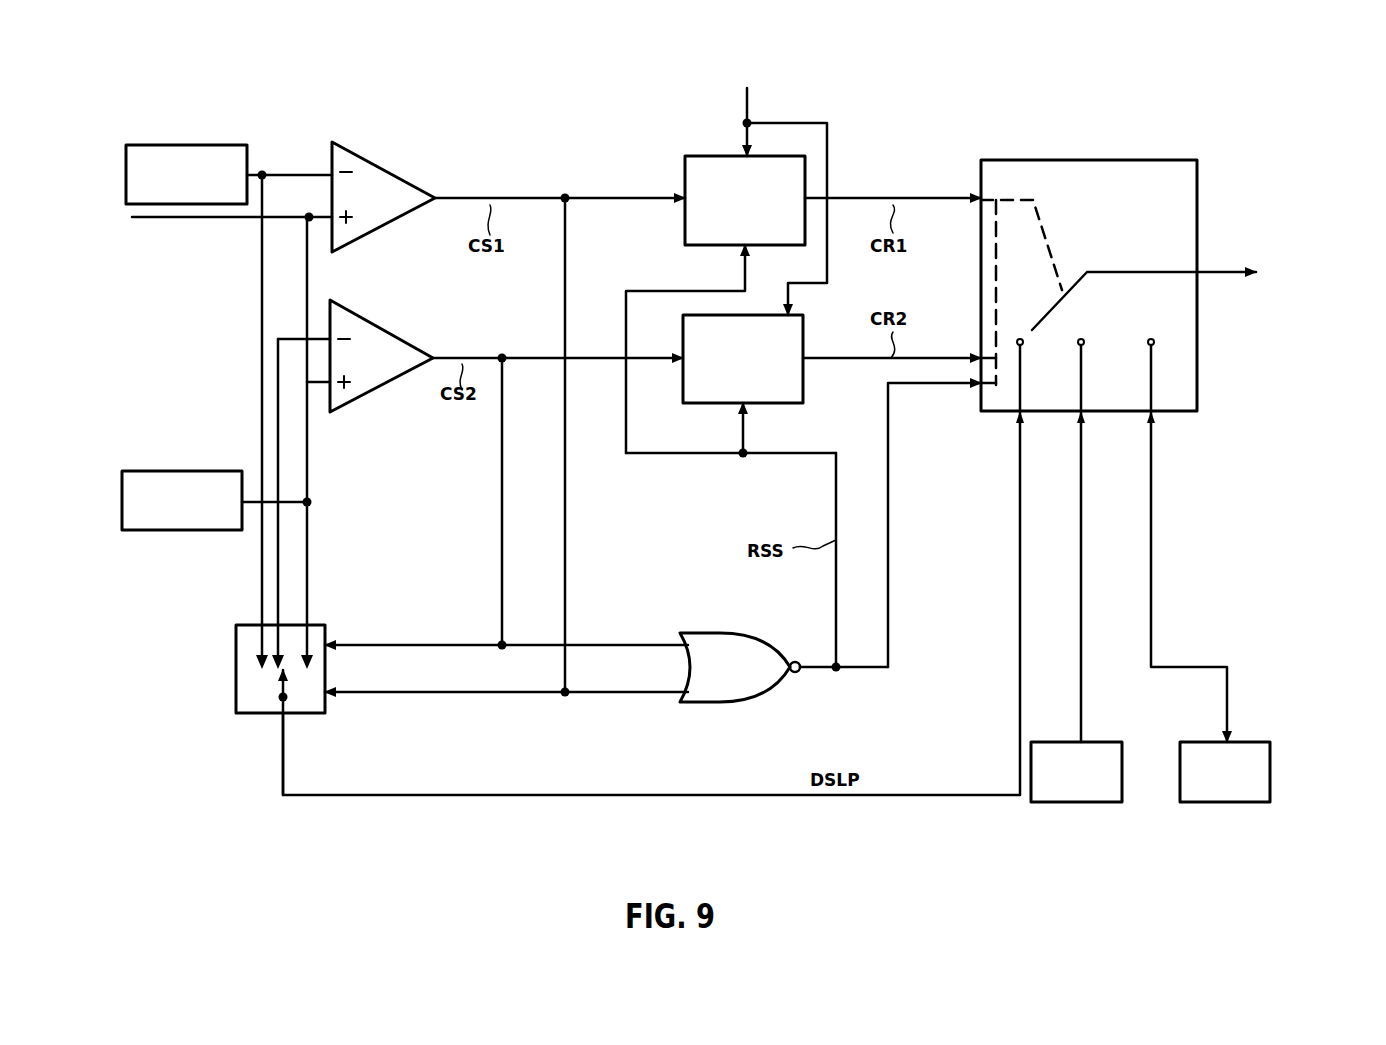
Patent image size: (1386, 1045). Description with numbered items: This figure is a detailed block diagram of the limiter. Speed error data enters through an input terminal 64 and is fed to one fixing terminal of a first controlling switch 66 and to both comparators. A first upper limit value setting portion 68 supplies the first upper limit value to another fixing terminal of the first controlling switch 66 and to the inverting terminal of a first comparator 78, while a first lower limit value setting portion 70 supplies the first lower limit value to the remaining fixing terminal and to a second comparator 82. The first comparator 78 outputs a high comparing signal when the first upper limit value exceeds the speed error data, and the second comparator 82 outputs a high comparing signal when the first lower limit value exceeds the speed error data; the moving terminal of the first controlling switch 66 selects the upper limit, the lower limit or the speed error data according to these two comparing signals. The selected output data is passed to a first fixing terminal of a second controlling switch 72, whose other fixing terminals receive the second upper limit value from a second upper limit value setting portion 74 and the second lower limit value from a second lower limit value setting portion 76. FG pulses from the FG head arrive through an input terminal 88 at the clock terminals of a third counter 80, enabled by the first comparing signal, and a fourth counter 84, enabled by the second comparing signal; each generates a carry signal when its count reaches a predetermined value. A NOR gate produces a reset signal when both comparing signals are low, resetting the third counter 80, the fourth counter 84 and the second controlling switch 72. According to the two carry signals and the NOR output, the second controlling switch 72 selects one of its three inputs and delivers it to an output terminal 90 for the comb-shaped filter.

The input terminal 64 is at (160, 222).
The first controlling switch 66 is at (236, 673).
The first upper limit value setting portion 68 is at (191, 145).
The first lower limit value setting portion 70 is at (187, 489).
The second controlling switch 72 is at (1072, 163).
The second upper limit value setting portion 74 is at (1058, 802).
The second lower limit value setting portion 76 is at (1236, 802).
The first comparator 78 is at (389, 161).
The third counter 80 is at (703, 156).
The second comparator 82 is at (383, 385).
The fourth counter 84 is at (803, 393).
The input terminal 88 is at (751, 99).
The output terminal 90 is at (1223, 278).